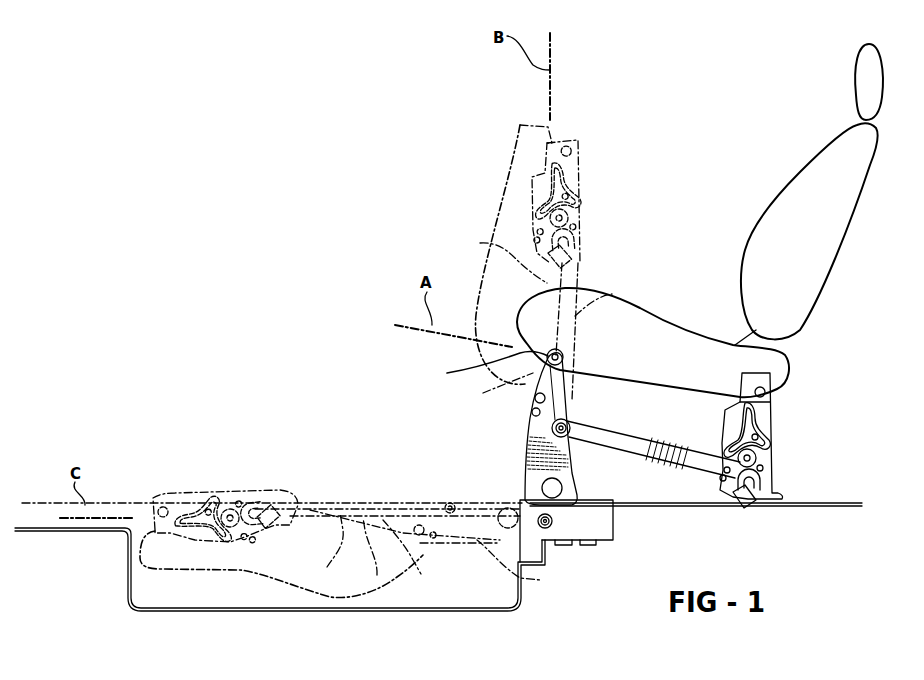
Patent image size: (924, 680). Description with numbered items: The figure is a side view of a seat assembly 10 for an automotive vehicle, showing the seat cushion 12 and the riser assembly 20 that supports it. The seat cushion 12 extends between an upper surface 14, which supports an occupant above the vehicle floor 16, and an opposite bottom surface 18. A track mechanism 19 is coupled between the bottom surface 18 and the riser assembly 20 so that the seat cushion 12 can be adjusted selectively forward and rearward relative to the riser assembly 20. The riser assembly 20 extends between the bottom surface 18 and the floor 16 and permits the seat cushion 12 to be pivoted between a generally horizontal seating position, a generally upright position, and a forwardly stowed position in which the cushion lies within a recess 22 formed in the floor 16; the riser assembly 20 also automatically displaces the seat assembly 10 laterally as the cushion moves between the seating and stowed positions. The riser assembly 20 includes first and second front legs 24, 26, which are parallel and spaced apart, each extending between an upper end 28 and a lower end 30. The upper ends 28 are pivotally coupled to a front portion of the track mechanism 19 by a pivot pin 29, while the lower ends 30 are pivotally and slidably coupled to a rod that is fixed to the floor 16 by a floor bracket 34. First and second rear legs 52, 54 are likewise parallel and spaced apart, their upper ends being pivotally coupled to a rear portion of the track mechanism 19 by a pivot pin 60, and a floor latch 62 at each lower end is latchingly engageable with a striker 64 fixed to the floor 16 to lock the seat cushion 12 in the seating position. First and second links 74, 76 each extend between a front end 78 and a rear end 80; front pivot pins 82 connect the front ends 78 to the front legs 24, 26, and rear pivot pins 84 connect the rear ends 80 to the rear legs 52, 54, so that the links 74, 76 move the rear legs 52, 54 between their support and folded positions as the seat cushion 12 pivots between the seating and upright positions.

The seat assembly 10 is at (403, 179).
The seat cushion 12 is at (543, 418).
The upper surface 14 is at (673, 324).
The floor 16 is at (45, 532).
The bottom surface 18 is at (690, 393).
The track mechanism 19 is at (622, 378).
The riser assembly 20 is at (570, 129).
The recess 22 is at (130, 598).
The first front leg 24 is at (451, 481).
The second front leg 26 is at (529, 441).
The upper end 28 is at (483, 393).
The pivot pin 29 is at (452, 471).
The lower end 30 is at (570, 455).
The floor bracket 34 is at (613, 515).
The first rear leg 52 is at (526, 333).
The second rear leg 54 is at (585, 210).
The pivot pin 60 is at (575, 151).
The floor latch 62 is at (570, 271).
The striker 64 is at (765, 506).
The first link 74 is at (497, 395).
The second link 76 is at (575, 316).
The front end 78 is at (612, 446).
The rear end 80 is at (686, 473).
The front pivot pin 82 is at (571, 427).
The rear pivot pin 84 is at (580, 225).